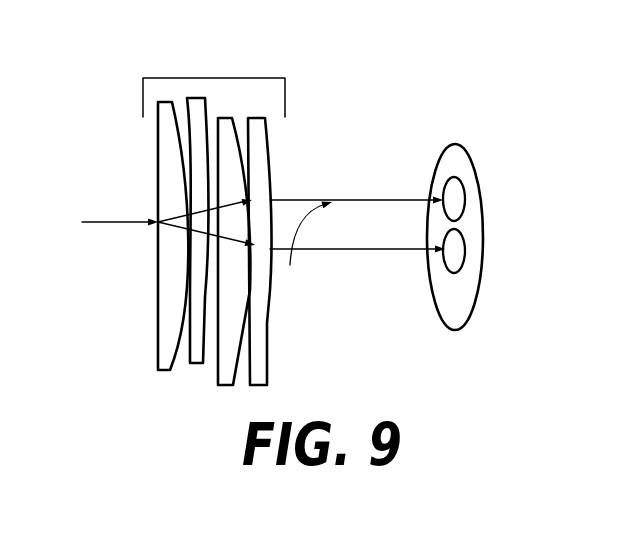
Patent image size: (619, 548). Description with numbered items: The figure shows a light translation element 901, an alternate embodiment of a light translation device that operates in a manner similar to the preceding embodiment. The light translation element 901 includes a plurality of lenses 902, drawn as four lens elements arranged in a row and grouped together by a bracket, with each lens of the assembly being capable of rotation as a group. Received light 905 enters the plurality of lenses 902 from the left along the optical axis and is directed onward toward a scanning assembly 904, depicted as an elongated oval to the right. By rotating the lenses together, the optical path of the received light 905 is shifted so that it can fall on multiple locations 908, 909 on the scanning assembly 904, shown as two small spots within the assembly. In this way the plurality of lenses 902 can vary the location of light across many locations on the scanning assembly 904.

The light translation element 901 is at (318, 150).
The plurality of lenses 902 is at (212, 78).
The scanning assembly 904 is at (475, 157).
The received light 905 is at (95, 222).
The location 908 is at (465, 252).
The location 909 is at (463, 187).